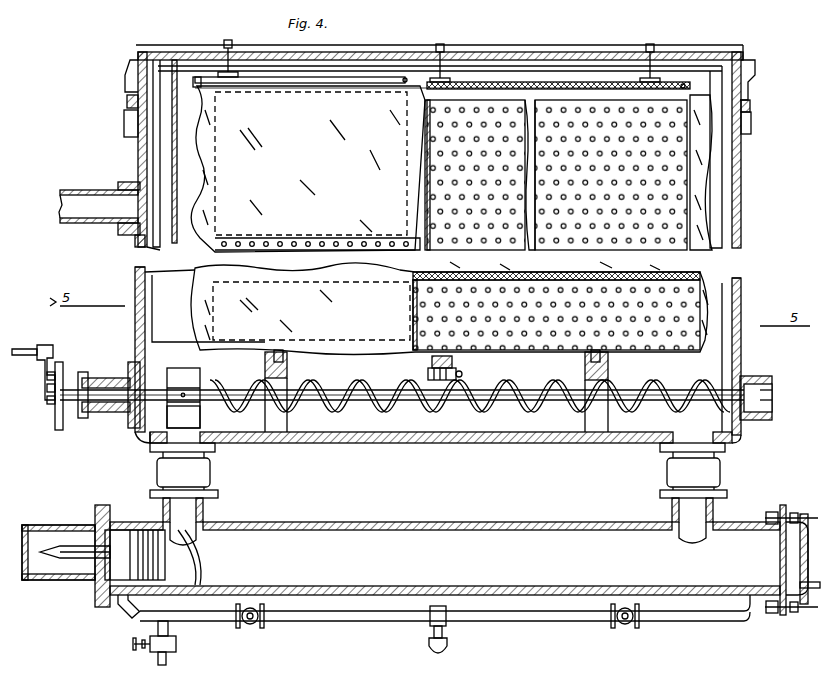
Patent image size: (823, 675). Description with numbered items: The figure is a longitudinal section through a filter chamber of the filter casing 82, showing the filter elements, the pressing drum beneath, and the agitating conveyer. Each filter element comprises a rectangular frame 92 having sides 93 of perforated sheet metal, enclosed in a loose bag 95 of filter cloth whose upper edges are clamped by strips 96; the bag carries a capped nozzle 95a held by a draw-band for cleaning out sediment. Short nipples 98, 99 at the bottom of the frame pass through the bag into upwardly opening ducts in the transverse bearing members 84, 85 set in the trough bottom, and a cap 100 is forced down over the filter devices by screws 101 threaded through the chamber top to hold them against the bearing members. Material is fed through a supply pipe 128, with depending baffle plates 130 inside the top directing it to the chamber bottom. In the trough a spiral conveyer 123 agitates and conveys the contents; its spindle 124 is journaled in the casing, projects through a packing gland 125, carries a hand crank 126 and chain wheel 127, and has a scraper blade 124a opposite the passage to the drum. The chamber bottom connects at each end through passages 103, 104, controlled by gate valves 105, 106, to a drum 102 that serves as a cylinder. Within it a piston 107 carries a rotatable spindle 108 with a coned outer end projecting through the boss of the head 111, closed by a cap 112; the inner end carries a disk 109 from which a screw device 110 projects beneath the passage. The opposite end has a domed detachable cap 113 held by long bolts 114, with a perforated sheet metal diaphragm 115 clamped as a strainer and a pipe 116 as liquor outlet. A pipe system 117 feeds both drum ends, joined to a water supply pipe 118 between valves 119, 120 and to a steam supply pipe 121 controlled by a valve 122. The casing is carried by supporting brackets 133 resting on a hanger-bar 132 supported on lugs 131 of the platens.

The filter casing 82 is at (200, 52).
The bearing member 84 is at (265, 363).
The bearing member 85 is at (608, 368).
The rectangular frame 92 is at (690, 180).
The sides of perforated sheet metal 93 is at (556, 175).
The bag of filter cloth 95 is at (755, 210).
The capped nozzle 95a is at (427, 368).
The strips 96 is at (380, 82).
The nipple 98 is at (591, 356).
The nipple 99 is at (284, 356).
The cap 100 is at (232, 75).
The screws 101 is at (236, 36).
The drum 102 is at (472, 522).
The passage 103 is at (200, 510).
The passage 104 is at (679, 516).
The gate valve 105 is at (184, 470).
The gate valve 106 is at (693, 470).
The piston 107 is at (135, 555).
The spindle 108 is at (74, 560).
The disk 109 is at (148, 528).
The screw device 110 is at (202, 570).
The head 111 is at (97, 505).
The cap 112 is at (40, 525).
The detachable cap 113 is at (806, 562).
The long bolts 114 is at (802, 514).
The perforated sheet metal diaphragm 115 is at (780, 560).
The pipe 116 is at (811, 577).
The pipe system 117 is at (580, 621).
The water supply pipe 118 is at (447, 640).
The valve 119 is at (256, 624).
The valve 120 is at (630, 626).
The steam supply pipe 121 is at (158, 660).
The valve 122 is at (132, 643).
The spiral conveyer 123 is at (455, 412).
The spindle 124 is at (160, 380).
The scraper blade 124a is at (200, 418).
The packing gland 125 is at (100, 378).
The hand crank 126 is at (42, 346).
The chain wheel 127 is at (57, 430).
The supply pipe 128 is at (96, 181).
The depending baffle plates 130 is at (172, 160).
The lugs 131 is at (124, 125).
The hanger-bar 132 is at (126, 100).
The supporting brackets 133 is at (130, 66).